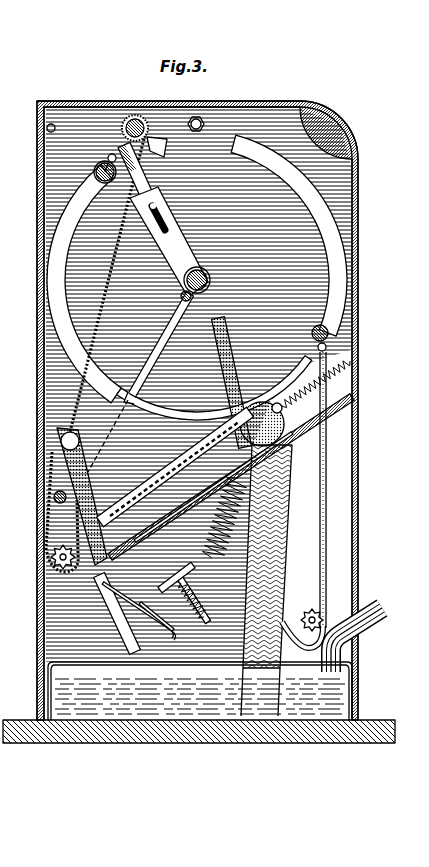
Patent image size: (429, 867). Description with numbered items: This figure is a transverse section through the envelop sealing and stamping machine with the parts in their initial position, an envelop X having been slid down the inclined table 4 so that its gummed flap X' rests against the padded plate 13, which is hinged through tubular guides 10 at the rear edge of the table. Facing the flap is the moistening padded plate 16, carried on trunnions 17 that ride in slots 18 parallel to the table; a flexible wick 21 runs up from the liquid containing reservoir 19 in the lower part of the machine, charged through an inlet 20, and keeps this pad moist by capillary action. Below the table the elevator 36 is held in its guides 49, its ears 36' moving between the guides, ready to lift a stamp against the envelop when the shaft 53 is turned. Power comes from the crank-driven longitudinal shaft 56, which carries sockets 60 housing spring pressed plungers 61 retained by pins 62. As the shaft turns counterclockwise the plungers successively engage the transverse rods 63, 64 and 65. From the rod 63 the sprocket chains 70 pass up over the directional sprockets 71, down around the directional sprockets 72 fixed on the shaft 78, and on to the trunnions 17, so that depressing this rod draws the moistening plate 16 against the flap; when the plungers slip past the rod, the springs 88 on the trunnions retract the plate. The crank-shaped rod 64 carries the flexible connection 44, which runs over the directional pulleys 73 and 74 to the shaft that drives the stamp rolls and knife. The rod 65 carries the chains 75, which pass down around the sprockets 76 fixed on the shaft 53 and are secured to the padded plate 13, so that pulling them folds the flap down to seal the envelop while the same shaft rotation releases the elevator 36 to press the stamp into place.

The inclined table 4 is at (283, 490).
The tubular guides 10 is at (110, 608).
The padded plate 13 is at (58, 437).
The padded plate 16 is at (222, 345).
The trunnions 17 is at (276, 407).
The slots 18 is at (210, 471).
The liquid containing reservoir 19 is at (337, 696).
The inlet 20 is at (384, 622).
The flexible wick 21 is at (292, 495).
The elevator 36 is at (166, 632).
The ears 36' is at (206, 600).
The flexible connection 44 is at (115, 397).
The guides 49 is at (207, 620).
The shaft 53 is at (312, 614).
The shaft 56 is at (216, 271).
The sockets 60 is at (163, 219).
The spring pressed plungers 61 is at (110, 155).
The pins 62 is at (156, 204).
The rod 63 is at (98, 172).
The rod 64 is at (148, 365).
The rod 65 is at (325, 327).
The flexible connections 70 is at (63, 327).
The directional sprockets 71 is at (130, 114).
The directional sprockets 72 is at (55, 546).
The directional pulley 73 is at (53, 497).
The directional pulley 74 is at (218, 537).
The flexible connections 75 is at (328, 528).
The sprockets 76 is at (328, 615).
The shaft 78 is at (53, 562).
The springs 88 is at (348, 378).
The envelop X is at (243, 474).
The gummed flap X' is at (150, 470).